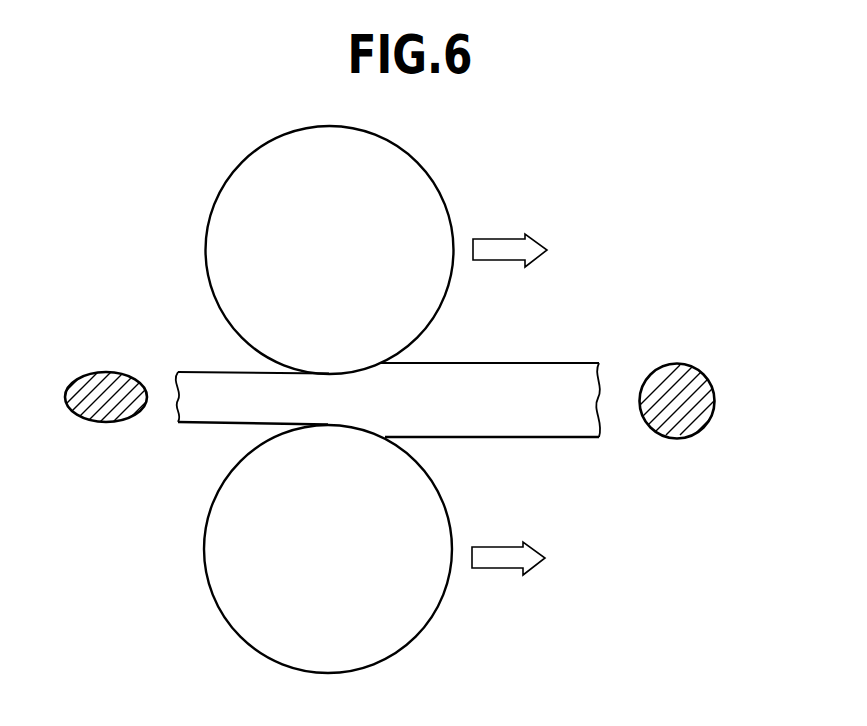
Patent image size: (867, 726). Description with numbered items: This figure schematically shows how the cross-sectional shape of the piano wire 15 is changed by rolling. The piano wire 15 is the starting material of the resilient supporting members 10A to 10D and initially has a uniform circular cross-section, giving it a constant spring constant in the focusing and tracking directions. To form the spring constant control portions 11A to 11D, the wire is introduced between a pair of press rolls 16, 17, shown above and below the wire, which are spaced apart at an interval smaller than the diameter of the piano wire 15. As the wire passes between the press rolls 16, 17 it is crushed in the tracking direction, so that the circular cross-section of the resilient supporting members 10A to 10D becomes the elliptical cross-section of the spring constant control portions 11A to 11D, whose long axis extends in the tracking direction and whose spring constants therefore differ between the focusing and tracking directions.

The piano wire 15 is at (573, 353).
The press roll 16 is at (428, 222).
The press roll 17 is at (417, 568).
The resilient supporting member 10A is at (633, 444).
The resilient supporting member 10D is at (567, 440).
The spring constant control portion 11A is at (127, 443).
The spring constant control portion 11D is at (187, 427).